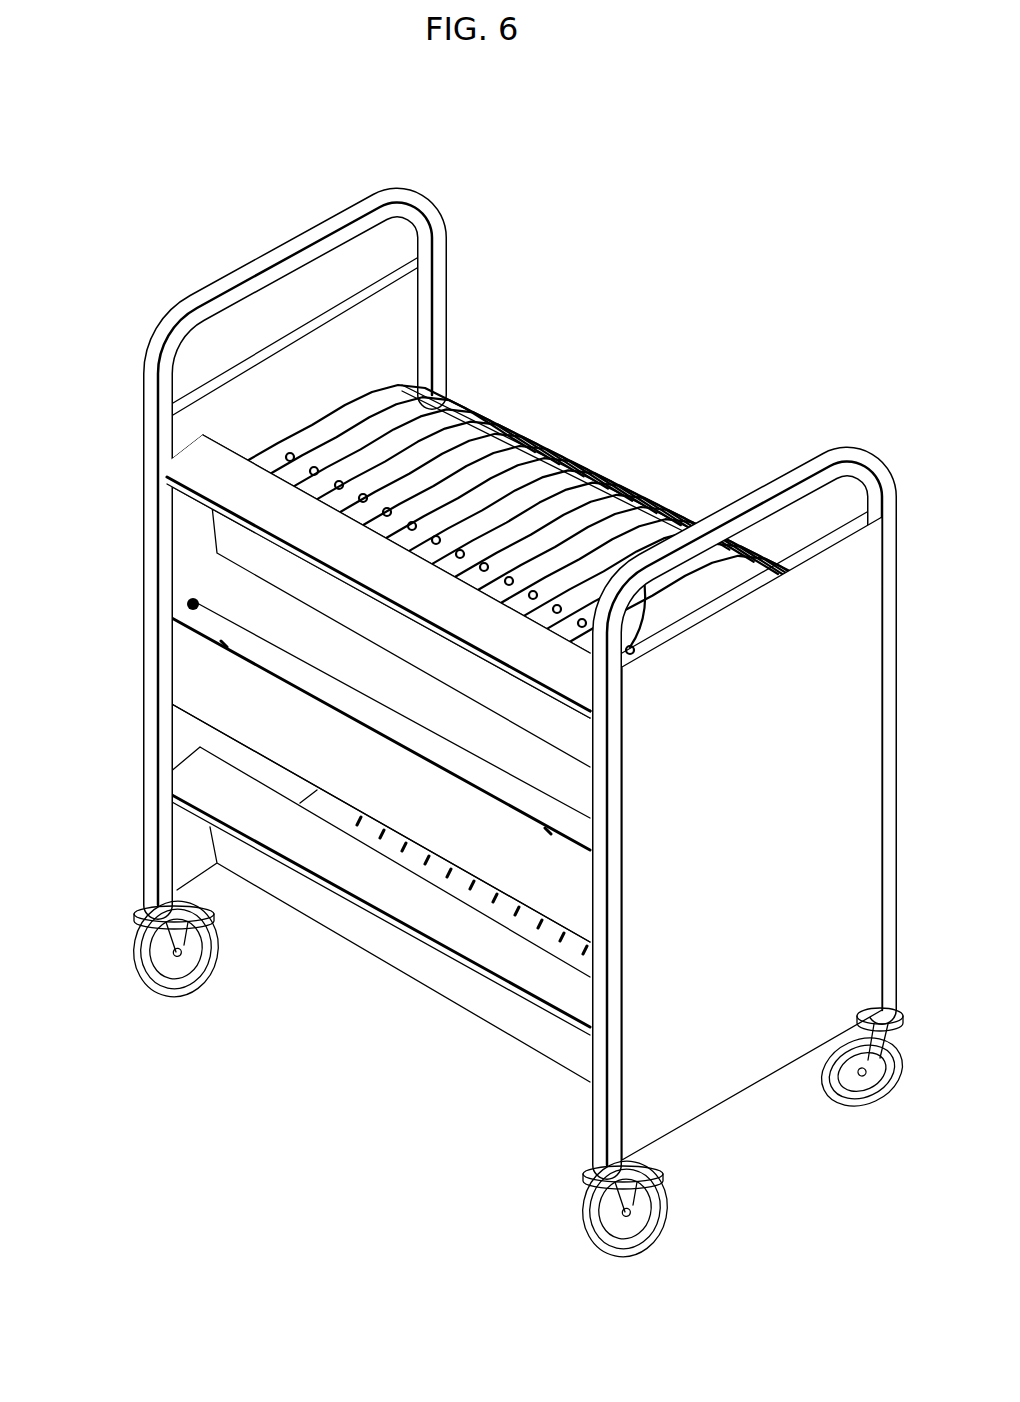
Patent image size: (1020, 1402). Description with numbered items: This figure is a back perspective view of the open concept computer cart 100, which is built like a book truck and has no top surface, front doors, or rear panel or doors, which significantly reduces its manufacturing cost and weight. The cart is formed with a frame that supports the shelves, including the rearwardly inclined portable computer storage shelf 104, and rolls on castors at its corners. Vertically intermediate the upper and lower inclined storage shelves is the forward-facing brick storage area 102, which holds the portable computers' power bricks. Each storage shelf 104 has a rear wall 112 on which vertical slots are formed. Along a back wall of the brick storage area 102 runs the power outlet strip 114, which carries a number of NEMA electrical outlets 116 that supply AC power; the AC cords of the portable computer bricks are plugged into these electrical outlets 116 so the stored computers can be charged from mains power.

The open concept computer cart 100 is at (447, 195).
The forward-facing brick storage area 102 is at (253, 594).
The portable computer storage shelf 104 is at (611, 452).
The rear wall 112 is at (230, 535).
The power outlet strip 114 is at (200, 667).
The electrical outlets 116 is at (378, 388).